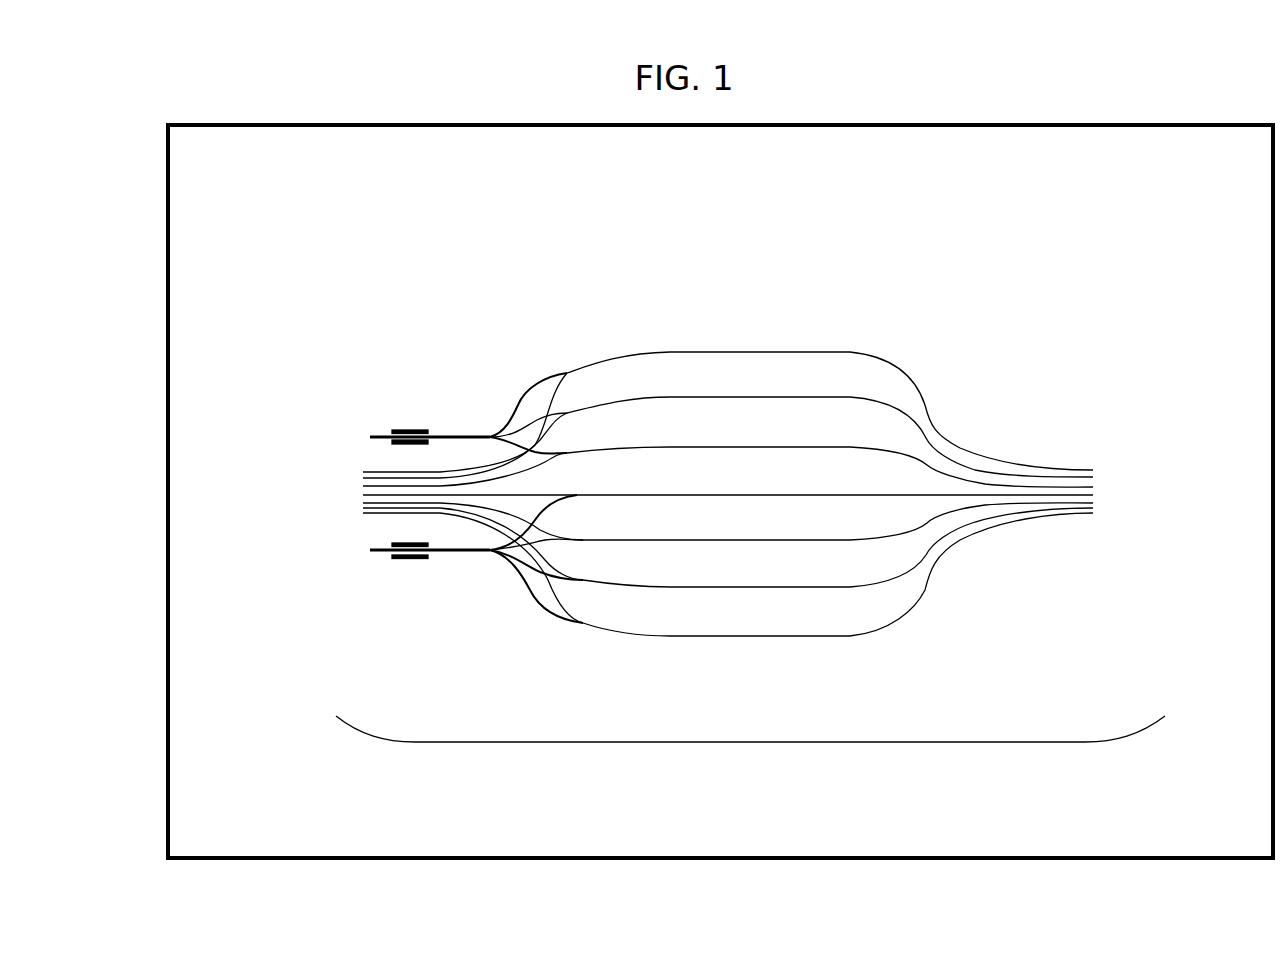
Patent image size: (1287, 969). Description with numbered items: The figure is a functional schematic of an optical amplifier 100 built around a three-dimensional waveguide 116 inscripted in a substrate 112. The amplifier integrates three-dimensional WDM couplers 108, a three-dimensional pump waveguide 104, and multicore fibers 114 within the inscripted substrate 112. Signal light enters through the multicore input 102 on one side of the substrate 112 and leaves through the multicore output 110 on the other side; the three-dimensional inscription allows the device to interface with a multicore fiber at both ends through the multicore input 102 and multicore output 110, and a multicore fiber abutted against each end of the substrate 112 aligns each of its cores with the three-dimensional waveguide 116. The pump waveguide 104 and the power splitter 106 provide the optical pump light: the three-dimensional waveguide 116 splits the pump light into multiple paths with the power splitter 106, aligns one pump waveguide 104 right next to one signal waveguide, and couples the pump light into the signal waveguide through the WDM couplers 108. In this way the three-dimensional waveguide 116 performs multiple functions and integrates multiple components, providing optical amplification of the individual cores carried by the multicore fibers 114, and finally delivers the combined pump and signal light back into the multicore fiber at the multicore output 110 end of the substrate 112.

The optical amplifier 100 is at (323, 41).
The multicore input 102 is at (333, 494).
The pump waveguide 104 is at (352, 556).
The power splitter 106 is at (440, 632).
The 3-D WDM couplers 108 is at (640, 680).
The multicore output 110 is at (1114, 489).
The substrate 112 is at (1052, 125).
The multicore fibers 114 is at (982, 428).
The 3-D waveguide 116 is at (750, 742).